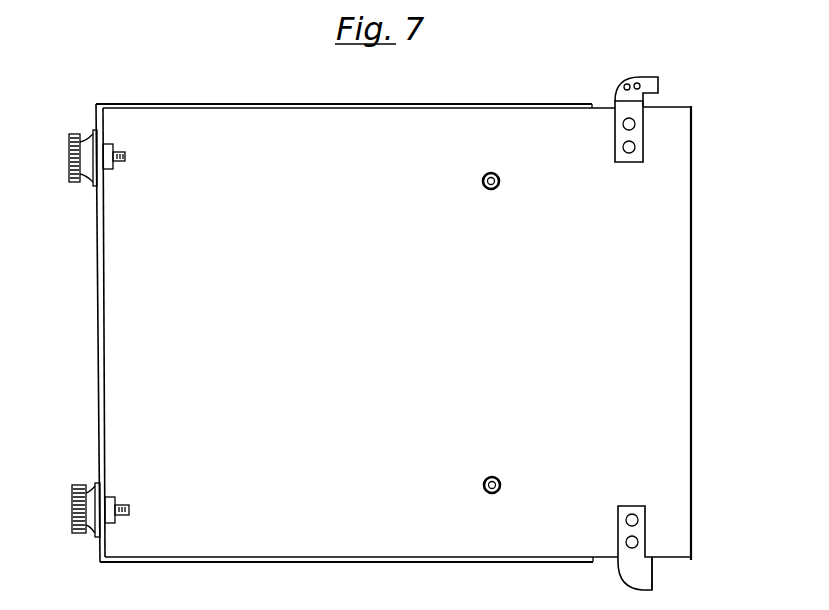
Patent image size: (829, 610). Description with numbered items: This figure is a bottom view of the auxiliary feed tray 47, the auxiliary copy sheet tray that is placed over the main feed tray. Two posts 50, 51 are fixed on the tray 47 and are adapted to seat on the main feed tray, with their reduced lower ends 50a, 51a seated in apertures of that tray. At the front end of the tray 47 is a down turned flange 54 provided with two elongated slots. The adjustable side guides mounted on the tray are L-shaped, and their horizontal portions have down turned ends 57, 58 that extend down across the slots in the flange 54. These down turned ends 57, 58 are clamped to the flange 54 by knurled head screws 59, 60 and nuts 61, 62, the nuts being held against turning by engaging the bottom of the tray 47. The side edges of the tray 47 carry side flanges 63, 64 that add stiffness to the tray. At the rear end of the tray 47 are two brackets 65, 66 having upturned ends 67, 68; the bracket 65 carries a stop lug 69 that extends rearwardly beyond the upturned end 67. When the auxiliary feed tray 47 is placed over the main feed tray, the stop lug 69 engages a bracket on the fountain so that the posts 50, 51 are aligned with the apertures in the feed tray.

The auxiliary feed tray 47 is at (232, 101).
The post 50 is at (484, 177).
The reduced lower end 50a is at (499, 177).
The post 51 is at (485, 481).
The reduced lower end 51a is at (500, 481).
The down turned flange 54 is at (105, 281).
The down turned end 57 is at (98, 174).
The down turned end 58 is at (100, 487).
The knurled head screw 59 is at (72, 158).
The knurled head screw 60 is at (74, 503).
The nut 61 is at (108, 148).
The nut 62 is at (110, 502).
The side flange 63 is at (488, 104).
The side flange 64 is at (440, 564).
The bracket 65 is at (619, 101).
The bracket 66 is at (620, 565).
The upturned end 67 is at (648, 104).
The upturned end 68 is at (652, 588).
The stop lug 69 is at (646, 78).